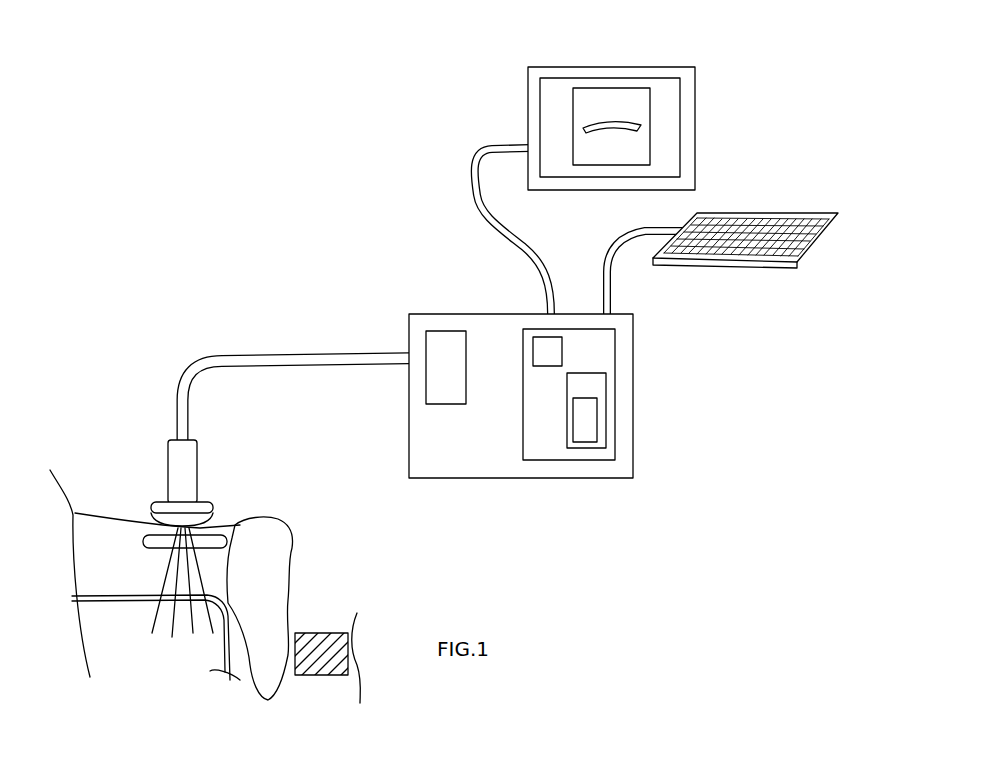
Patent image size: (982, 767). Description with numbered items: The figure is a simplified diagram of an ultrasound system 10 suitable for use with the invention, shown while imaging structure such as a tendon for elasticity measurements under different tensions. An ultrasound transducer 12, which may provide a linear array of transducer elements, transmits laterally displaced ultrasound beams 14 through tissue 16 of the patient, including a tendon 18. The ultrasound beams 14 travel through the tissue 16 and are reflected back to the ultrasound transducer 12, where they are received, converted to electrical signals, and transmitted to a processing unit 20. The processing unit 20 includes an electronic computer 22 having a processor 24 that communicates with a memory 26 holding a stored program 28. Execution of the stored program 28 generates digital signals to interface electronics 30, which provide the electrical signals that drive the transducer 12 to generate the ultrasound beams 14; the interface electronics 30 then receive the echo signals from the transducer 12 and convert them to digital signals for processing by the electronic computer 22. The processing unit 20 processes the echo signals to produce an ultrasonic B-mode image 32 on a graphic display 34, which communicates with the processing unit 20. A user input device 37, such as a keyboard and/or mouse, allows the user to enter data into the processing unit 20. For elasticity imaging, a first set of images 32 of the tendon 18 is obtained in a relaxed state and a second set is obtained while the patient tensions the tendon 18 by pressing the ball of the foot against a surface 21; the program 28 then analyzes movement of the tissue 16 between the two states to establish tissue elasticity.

The ultrasound system 10 is at (790, 100).
The ultrasound transducer 12 is at (168, 482).
The ultrasound beams 14 is at (190, 625).
The tissue 16 is at (280, 560).
The tendon 18 is at (250, 519).
The processing unit 20 is at (526, 396).
The surface 21 is at (334, 633).
The electronic computer 22 is at (616, 358).
The processor 24 is at (533, 350).
The memory 26 is at (606, 415).
The stored program 28 is at (585, 432).
The interface electronics 30 is at (426, 346).
The B-mode image 32 is at (625, 88).
The graphic display 34 is at (528, 85).
The user input device 37 is at (838, 222).